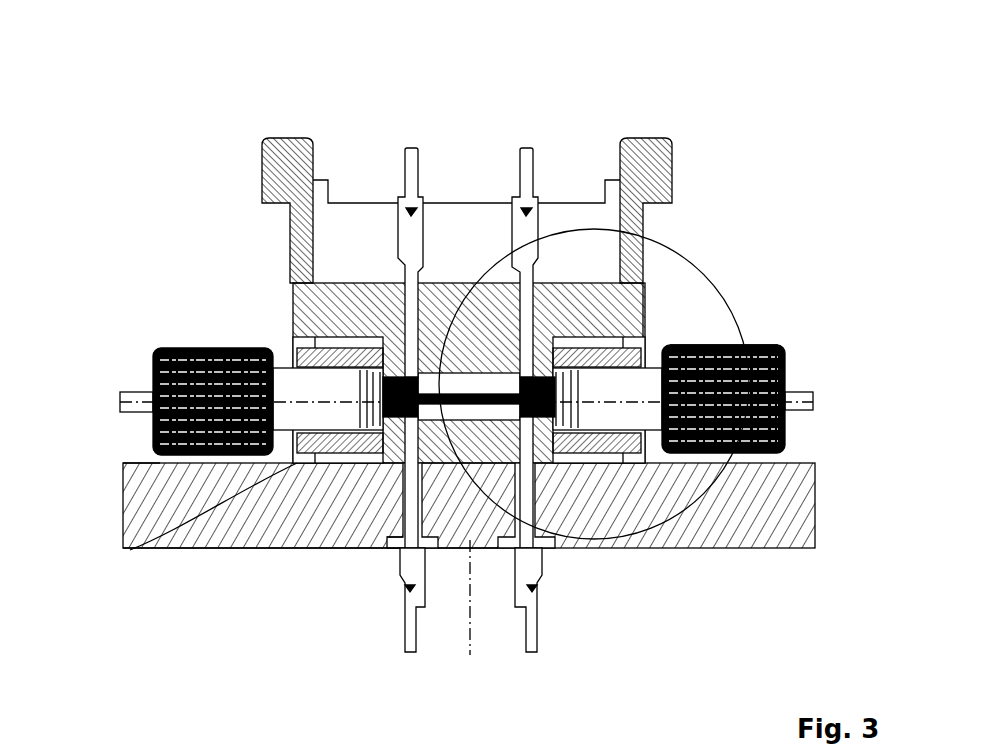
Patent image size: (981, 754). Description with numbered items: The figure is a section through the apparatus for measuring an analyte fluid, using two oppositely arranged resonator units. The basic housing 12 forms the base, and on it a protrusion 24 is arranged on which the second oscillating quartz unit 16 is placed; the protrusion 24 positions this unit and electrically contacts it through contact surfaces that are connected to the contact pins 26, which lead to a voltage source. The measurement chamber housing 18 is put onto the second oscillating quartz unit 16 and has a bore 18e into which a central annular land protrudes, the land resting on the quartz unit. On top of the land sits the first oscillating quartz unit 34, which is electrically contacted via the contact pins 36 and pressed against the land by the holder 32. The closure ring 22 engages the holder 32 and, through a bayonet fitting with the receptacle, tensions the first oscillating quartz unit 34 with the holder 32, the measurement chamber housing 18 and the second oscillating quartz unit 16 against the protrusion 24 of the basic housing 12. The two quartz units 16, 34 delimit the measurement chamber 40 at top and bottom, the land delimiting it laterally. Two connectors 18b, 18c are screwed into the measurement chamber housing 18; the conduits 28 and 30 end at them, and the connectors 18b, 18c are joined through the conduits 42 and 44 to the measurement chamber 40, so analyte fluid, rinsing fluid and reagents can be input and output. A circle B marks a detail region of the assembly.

The basic housing 12 is at (793, 508).
The second oscillating quartz unit 16 is at (233, 550).
The measurement chamber housing 18 is at (290, 340).
The connector 18b is at (123, 467).
The connector 18c is at (773, 345).
The bore 18e is at (643, 288).
The closure ring 22 is at (262, 170).
The protrusion 24 is at (590, 548).
The contact pins 26 is at (515, 648).
The conduit 28 is at (130, 392).
The conduit 30 is at (813, 392).
The holder 32 is at (293, 292).
The first oscillating quartz unit 34 is at (414, 322).
The contact pins 36 is at (537, 150).
The measurement chamber 40 is at (393, 548).
The conduit 42 is at (130, 551).
The conduit 44 is at (714, 466).
The detail circle B is at (700, 265).